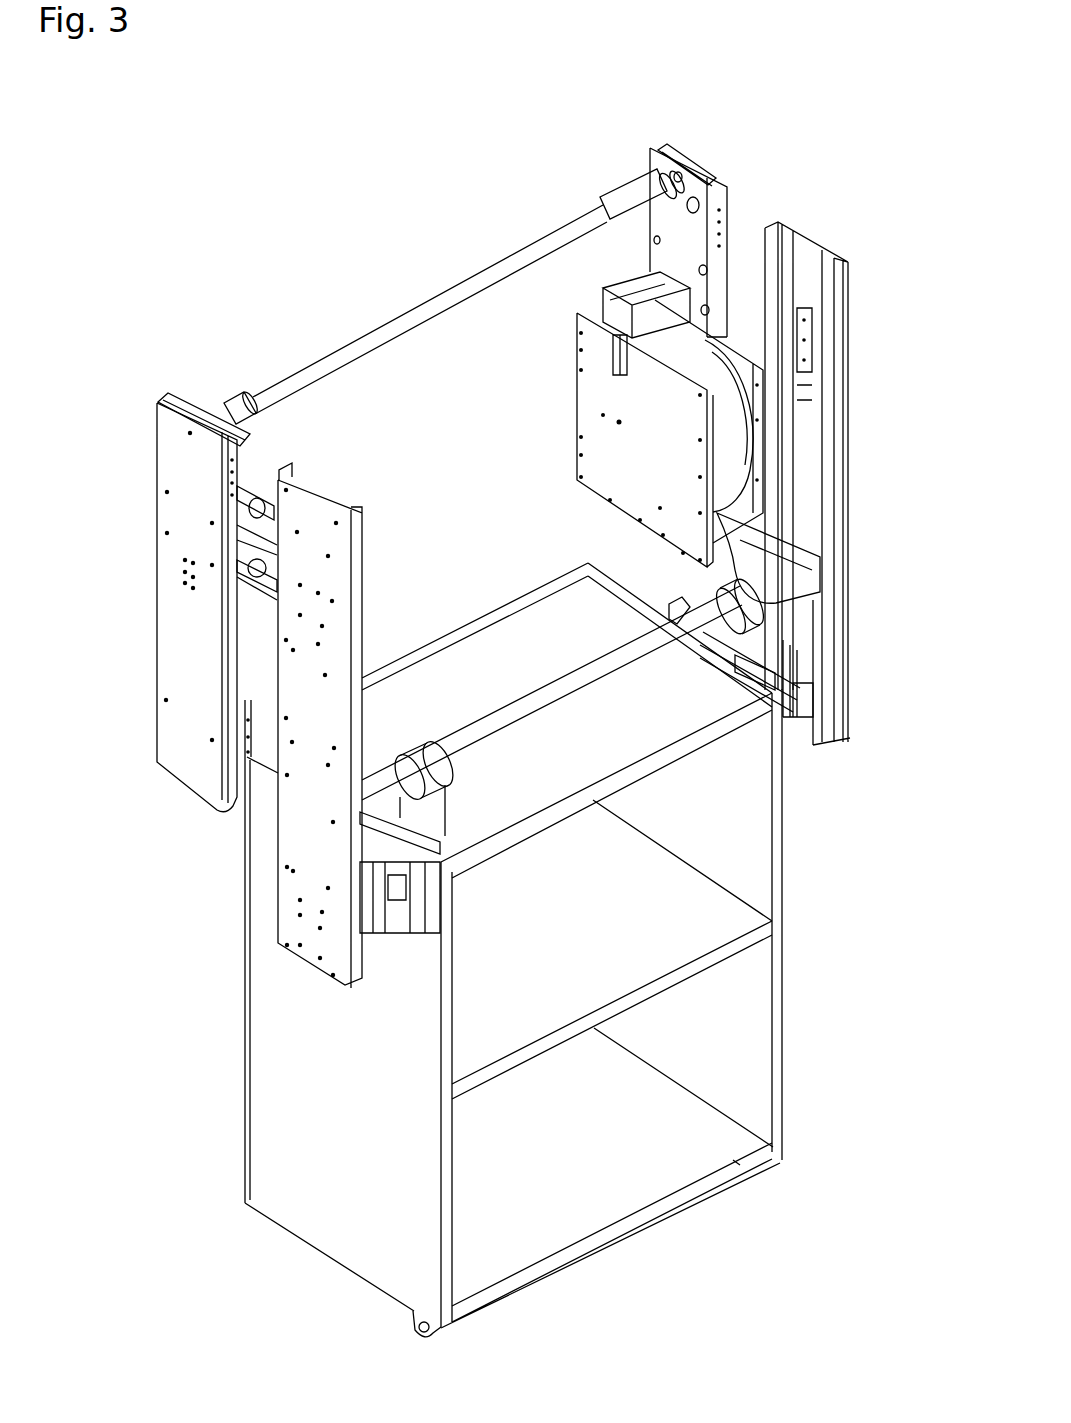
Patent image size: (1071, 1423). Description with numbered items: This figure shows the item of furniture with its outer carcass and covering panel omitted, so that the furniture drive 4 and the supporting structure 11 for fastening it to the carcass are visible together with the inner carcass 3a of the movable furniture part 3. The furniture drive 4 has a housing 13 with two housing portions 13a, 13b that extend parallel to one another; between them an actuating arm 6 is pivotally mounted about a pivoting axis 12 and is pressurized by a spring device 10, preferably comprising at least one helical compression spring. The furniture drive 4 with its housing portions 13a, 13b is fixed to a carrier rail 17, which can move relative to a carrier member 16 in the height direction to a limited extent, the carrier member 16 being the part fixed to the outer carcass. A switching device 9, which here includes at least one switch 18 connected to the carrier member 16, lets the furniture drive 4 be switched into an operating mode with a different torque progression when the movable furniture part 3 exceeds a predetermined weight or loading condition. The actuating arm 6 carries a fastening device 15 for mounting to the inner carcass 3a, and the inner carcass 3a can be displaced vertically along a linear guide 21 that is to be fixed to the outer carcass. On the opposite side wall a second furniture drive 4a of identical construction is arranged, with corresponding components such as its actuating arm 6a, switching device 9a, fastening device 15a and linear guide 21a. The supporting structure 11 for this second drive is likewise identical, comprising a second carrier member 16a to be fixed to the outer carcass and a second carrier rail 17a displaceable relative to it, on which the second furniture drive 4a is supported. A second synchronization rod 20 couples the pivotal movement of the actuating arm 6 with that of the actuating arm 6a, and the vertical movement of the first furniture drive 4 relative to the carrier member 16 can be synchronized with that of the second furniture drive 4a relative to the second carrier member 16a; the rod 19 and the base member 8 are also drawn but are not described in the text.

The movable furniture part 3 is at (780, 1038).
The inner carcass 3a is at (612, 1010).
The base rail 8 is at (617, 1245).
The second carrier member 16a is at (173, 450).
The second carrier rail 17a is at (186, 396).
The connecting rod 19 is at (445, 300).
The switching device 9 is at (594, 268).
The supporting structure 11 is at (763, 195).
The carrier member 16 is at (695, 163).
The carrier rail 17 is at (650, 160).
The linear guide 21 is at (850, 364).
The housing portion 13a is at (738, 335).
The furniture drive 4 is at (551, 442).
The housing 13 is at (576, 518).
The housing portion 13b is at (583, 393).
The pivoting axis 12 is at (616, 425).
The switch 18 is at (612, 352).
The spring device 10 is at (737, 533).
The actuating arm 6 is at (780, 547).
The second synchronization rod 20 is at (583, 680).
The fastening device 15 is at (810, 754).
The second furniture drive 4a is at (252, 664).
The linear guide 21a is at (298, 938).
The switching device 9a is at (268, 460).
The actuating arm 6a is at (368, 763).
The fastening device 15a is at (398, 950).